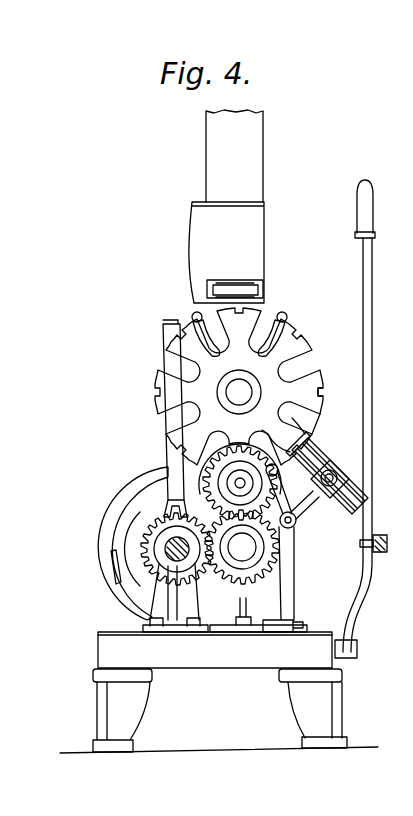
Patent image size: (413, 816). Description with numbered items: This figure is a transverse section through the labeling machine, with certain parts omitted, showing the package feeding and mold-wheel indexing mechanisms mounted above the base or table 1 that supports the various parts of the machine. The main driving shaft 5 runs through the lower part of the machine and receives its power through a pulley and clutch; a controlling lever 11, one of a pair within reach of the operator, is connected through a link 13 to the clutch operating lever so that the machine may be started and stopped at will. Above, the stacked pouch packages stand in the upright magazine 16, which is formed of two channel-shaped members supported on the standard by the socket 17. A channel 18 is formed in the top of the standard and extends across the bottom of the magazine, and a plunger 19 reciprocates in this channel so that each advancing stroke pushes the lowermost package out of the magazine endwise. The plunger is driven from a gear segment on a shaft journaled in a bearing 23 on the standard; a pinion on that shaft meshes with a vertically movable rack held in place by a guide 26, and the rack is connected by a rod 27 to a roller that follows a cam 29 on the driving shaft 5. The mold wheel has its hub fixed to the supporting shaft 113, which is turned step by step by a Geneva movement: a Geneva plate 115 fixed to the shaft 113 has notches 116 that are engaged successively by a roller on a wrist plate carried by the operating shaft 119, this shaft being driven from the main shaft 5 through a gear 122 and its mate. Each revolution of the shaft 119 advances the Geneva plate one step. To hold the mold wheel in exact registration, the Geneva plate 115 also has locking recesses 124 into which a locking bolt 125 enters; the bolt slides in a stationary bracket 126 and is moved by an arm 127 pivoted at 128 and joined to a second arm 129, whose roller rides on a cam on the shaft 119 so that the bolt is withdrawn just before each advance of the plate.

The base or table 1 is at (112, 637).
The main driving shaft 5 is at (167, 553).
The controlling lever 11 is at (373, 296).
The link 13 is at (375, 549).
The upright magazine 16 is at (263, 163).
The socket 17 is at (265, 236).
The channel 18 is at (265, 300).
The plunger 19 is at (242, 288).
The bearing 23 is at (234, 582).
The guide 26 is at (165, 330).
The rod 27 is at (165, 425).
The cam 29 is at (99, 519).
The supporting shaft 113 is at (239, 392).
The Geneva plate 115 is at (305, 353).
The notches 116 is at (318, 409).
The operating shaft 119 is at (235, 483).
The gear 122 is at (207, 469).
The locking recesses 124 is at (322, 389).
The locking bolt 125 is at (305, 437).
The stationary bracket 126 is at (327, 473).
The arm 127 is at (324, 501).
The pivot 128 is at (295, 527).
The arm 129 is at (291, 552).